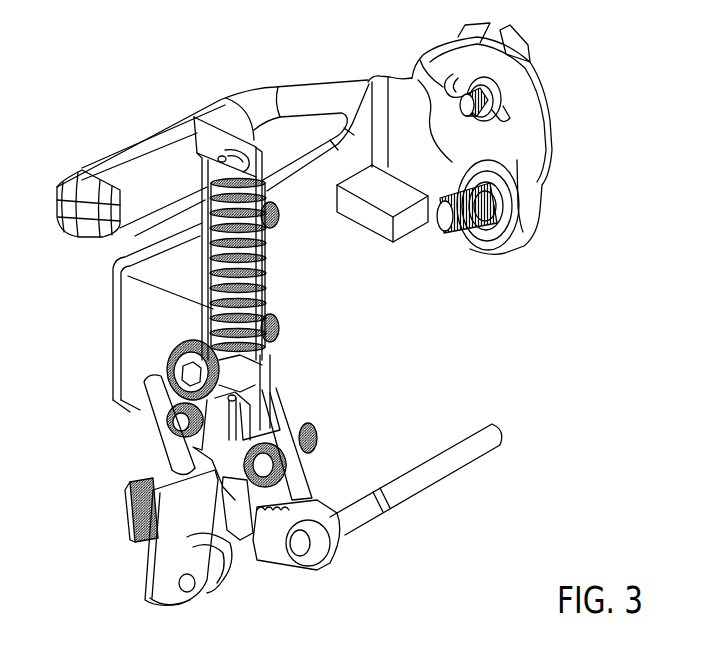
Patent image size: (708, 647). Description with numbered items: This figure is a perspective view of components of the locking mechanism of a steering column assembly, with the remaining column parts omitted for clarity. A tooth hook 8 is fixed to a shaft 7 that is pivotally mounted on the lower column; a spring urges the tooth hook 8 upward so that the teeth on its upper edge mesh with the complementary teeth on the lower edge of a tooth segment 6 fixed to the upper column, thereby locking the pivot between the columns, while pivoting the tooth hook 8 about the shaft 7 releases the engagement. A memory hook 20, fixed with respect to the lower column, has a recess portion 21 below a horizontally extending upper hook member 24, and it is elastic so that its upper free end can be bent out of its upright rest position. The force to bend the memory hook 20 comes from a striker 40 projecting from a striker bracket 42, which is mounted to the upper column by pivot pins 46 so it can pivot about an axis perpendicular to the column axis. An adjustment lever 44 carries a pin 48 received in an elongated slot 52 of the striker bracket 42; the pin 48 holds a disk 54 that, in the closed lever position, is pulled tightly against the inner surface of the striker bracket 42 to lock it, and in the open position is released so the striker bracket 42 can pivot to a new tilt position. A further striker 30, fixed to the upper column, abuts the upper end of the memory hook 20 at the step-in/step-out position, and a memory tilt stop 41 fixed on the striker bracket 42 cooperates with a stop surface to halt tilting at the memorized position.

The tooth segment 6 is at (300, 495).
The shaft 7 is at (357, 533).
The tooth hook 8 is at (280, 556).
The memory hook 20 is at (150, 552).
The recess portion 21 is at (148, 594).
The upper hook member 24 is at (137, 492).
The striker 30 is at (240, 532).
The striker 40 is at (148, 437).
The memory tilt stop 41 is at (392, 213).
The striker bracket 42 is at (162, 342).
The adjustment lever 44 is at (262, 92).
The pivot pins 46 is at (446, 238).
The pin 48 is at (460, 117).
The elongated slot 52 is at (420, 57).
The disk 54 is at (500, 85).